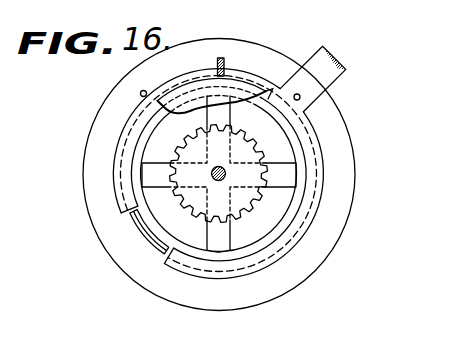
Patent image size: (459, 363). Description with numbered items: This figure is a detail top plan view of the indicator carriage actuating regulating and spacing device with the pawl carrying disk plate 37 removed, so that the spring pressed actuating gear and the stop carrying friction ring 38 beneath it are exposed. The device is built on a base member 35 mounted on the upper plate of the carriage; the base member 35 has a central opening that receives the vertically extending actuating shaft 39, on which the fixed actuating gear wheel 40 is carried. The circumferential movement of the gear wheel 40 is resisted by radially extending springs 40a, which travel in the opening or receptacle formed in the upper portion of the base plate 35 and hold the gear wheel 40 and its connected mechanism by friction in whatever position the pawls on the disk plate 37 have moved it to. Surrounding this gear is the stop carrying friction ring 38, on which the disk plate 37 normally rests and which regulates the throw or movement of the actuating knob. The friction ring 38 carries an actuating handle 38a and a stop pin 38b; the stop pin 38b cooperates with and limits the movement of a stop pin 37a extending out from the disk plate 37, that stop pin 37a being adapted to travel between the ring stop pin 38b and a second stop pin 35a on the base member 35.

The base member 35 is at (123, 100).
The second stop pin 35a is at (141, 92).
The pawl carrying disk plate 37 is at (233, 82).
The stop pin 37a is at (220, 58).
The stop carrying friction ring 38 is at (297, 133).
The actuating handle 38a is at (313, 67).
The stop pin 38b is at (300, 97).
The actuating shaft 39 is at (226, 168).
The actuating gear wheel 40 is at (248, 208).
The radially extending springs 40a is at (214, 235).